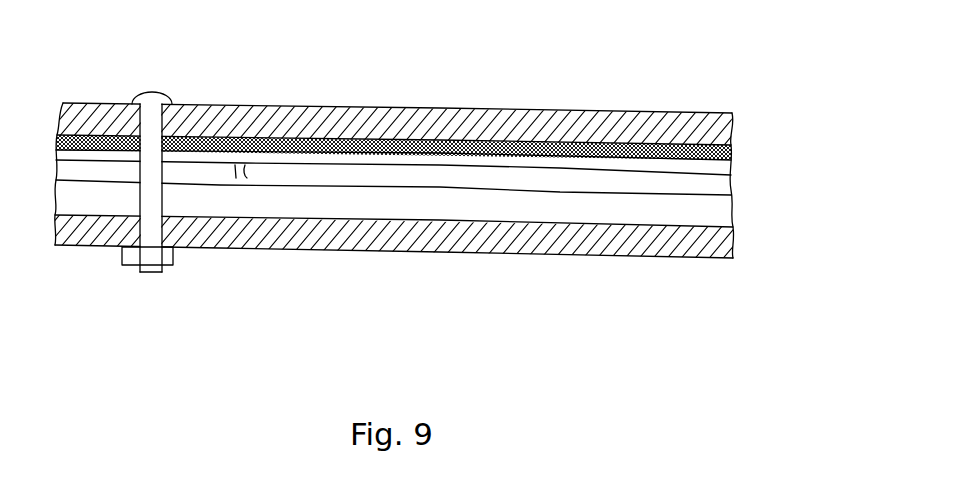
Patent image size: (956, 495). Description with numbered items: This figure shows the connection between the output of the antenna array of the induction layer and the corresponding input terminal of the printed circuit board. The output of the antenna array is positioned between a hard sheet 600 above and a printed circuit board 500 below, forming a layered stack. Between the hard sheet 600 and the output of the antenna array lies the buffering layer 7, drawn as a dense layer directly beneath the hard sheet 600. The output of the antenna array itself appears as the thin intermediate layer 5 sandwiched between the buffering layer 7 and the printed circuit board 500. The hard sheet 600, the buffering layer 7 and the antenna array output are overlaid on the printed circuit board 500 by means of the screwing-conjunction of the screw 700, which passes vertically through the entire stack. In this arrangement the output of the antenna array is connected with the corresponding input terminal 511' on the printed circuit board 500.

The screw 700 is at (162, 106).
The hard sheet 600 is at (353, 113).
The buffering layer 7 is at (735, 152).
The input terminal 511' is at (301, 269).
The intermediate layer 5 is at (498, 163).
The printed circuit board 500 is at (657, 212).